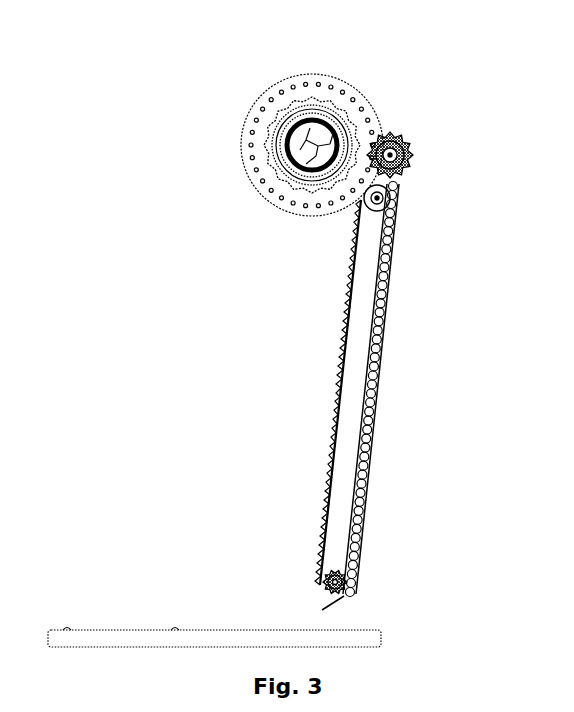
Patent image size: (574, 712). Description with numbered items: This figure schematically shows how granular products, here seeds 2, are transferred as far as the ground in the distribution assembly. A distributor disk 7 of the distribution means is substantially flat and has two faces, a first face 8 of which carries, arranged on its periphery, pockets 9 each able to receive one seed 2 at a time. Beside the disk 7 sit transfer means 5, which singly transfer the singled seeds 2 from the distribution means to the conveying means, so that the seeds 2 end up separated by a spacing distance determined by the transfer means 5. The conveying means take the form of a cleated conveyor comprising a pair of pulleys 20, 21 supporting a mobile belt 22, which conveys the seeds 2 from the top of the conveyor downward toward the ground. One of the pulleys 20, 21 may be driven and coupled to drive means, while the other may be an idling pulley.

The seeds 2 is at (348, 95).
The transfer means 5 is at (420, 134).
The distributor disk 7 is at (375, 100).
The first face 8 is at (240, 132).
The pockets 9 is at (259, 111).
The pulley 20 is at (388, 198).
The pulley 21 is at (341, 577).
The mobile belt 22 is at (335, 453).